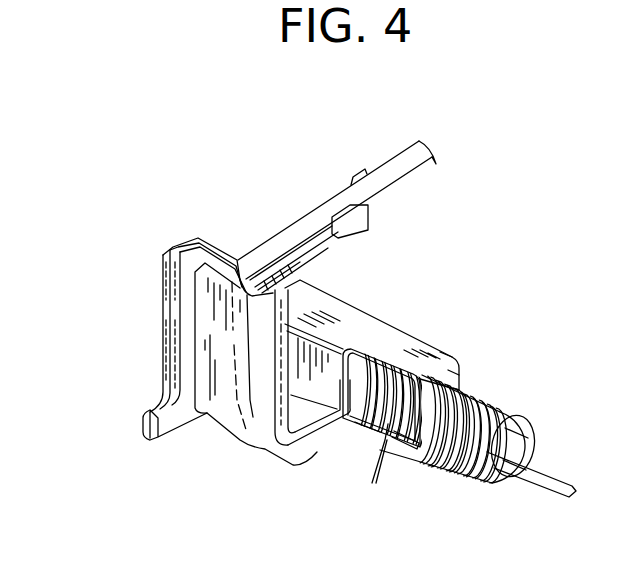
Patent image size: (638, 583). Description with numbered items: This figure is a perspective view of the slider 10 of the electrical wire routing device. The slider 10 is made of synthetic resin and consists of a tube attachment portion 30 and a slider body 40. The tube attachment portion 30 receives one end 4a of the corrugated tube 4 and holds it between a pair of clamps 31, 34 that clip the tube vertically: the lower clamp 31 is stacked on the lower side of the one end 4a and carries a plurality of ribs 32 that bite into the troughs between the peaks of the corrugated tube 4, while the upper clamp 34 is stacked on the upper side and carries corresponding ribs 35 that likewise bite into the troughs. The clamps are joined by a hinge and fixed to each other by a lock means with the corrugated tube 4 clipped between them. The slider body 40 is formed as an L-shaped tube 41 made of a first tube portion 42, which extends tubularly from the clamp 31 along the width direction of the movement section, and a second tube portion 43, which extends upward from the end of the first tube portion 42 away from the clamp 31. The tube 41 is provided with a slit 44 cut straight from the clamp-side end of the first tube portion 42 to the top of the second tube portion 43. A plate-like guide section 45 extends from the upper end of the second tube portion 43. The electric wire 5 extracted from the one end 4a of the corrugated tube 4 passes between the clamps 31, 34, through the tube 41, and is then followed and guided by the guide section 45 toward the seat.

The corrugated tube 4 is at (446, 399).
The one end of the corrugated tube 4a is at (367, 432).
The electric wire 5 is at (546, 474).
The slider 10 is at (126, 352).
The tube attachment portion 30 is at (400, 326).
The clamp 31 is at (400, 452).
The ribs 32 is at (371, 467).
The clamp 34 is at (446, 358).
The ribs 35 is at (384, 373).
The slider body 40 is at (223, 333).
The tube 41 is at (293, 426).
The first tube portion 42 is at (317, 450).
The second tube portion 43 is at (276, 450).
The slit 44 is at (190, 305).
The guide section 45 is at (332, 192).